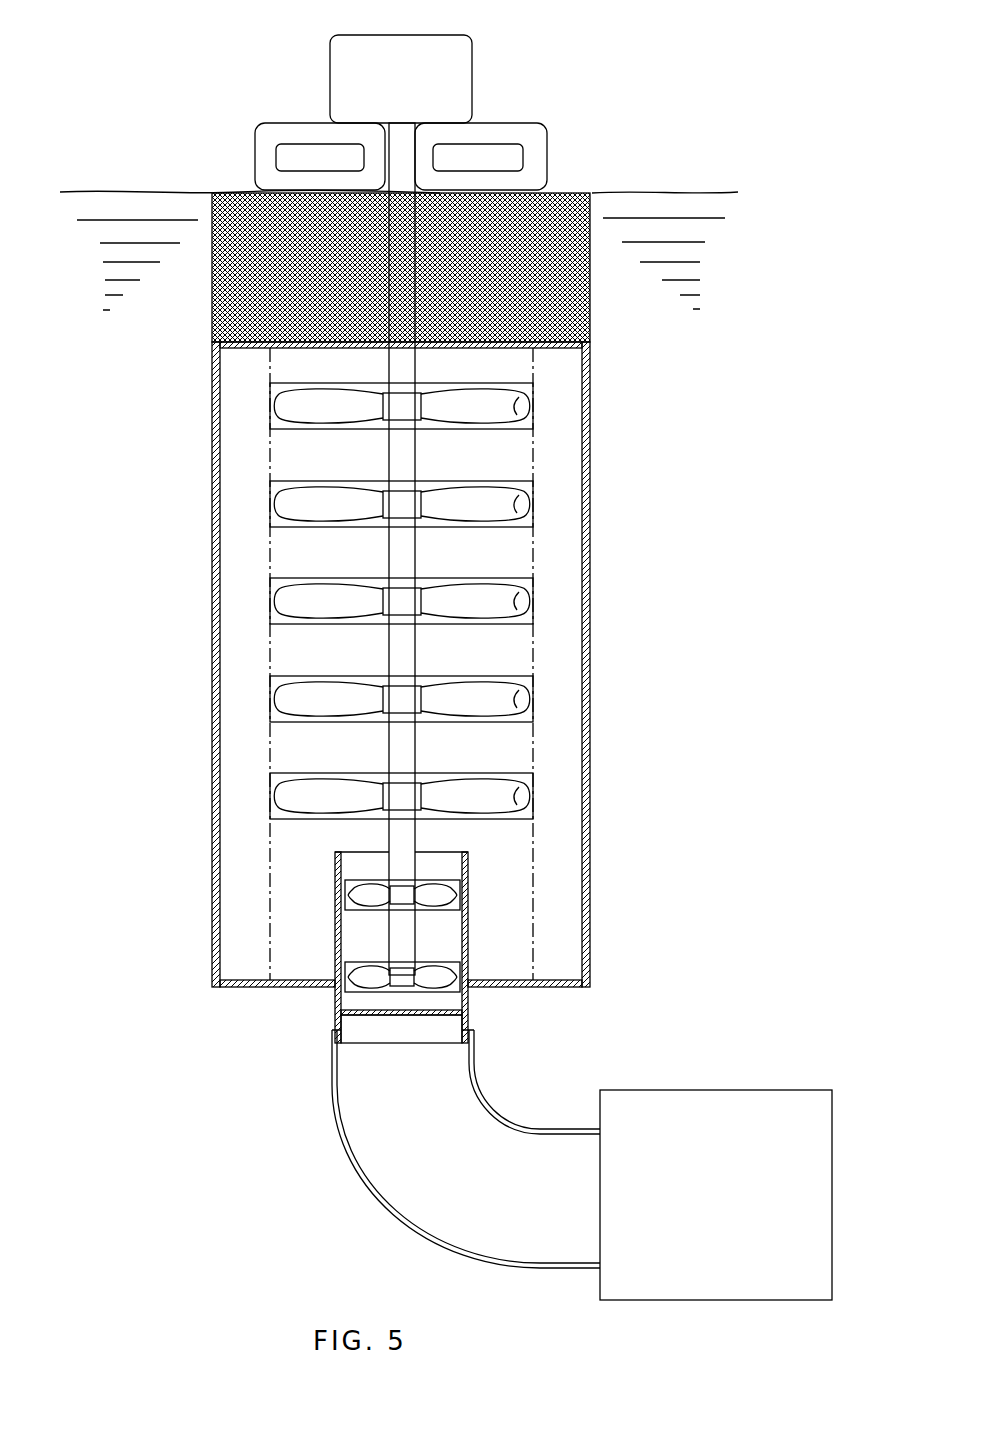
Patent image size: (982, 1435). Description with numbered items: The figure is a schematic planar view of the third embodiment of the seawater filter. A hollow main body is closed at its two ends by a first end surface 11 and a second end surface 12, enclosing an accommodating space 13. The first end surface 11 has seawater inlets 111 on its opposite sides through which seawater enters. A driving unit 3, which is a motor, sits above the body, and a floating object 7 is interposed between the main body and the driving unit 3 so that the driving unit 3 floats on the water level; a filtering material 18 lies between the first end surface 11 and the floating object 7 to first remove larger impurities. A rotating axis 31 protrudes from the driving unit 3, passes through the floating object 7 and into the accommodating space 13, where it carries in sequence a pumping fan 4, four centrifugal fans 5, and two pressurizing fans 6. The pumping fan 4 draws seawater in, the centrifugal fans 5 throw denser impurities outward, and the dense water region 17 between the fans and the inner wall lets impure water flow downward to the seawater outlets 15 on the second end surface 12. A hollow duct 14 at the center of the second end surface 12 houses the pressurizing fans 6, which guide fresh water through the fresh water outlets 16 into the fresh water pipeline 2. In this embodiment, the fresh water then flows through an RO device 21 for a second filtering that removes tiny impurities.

The fresh water pipeline 2 is at (356, 1155).
The driving unit 3 is at (462, 49).
The pumping fan 4 is at (522, 397).
The centrifugal fan 5 is at (522, 483).
The pressurizing fan 6 is at (447, 883).
The floating object 7 is at (542, 168).
The first end surface 11 is at (212, 328).
The second end surface 12 is at (505, 1000).
The accommodating space 13 is at (258, 543).
The duct 14 is at (335, 955).
The seawater outlet 15 is at (245, 987).
The fresh water outlet 16 is at (356, 1013).
The dense water region 17 is at (552, 517).
The filtering material 18 is at (590, 305).
The RO device 21 is at (735, 1097).
The rotating axis 31 is at (402, 140).
The seawater inlet 111 is at (278, 348).